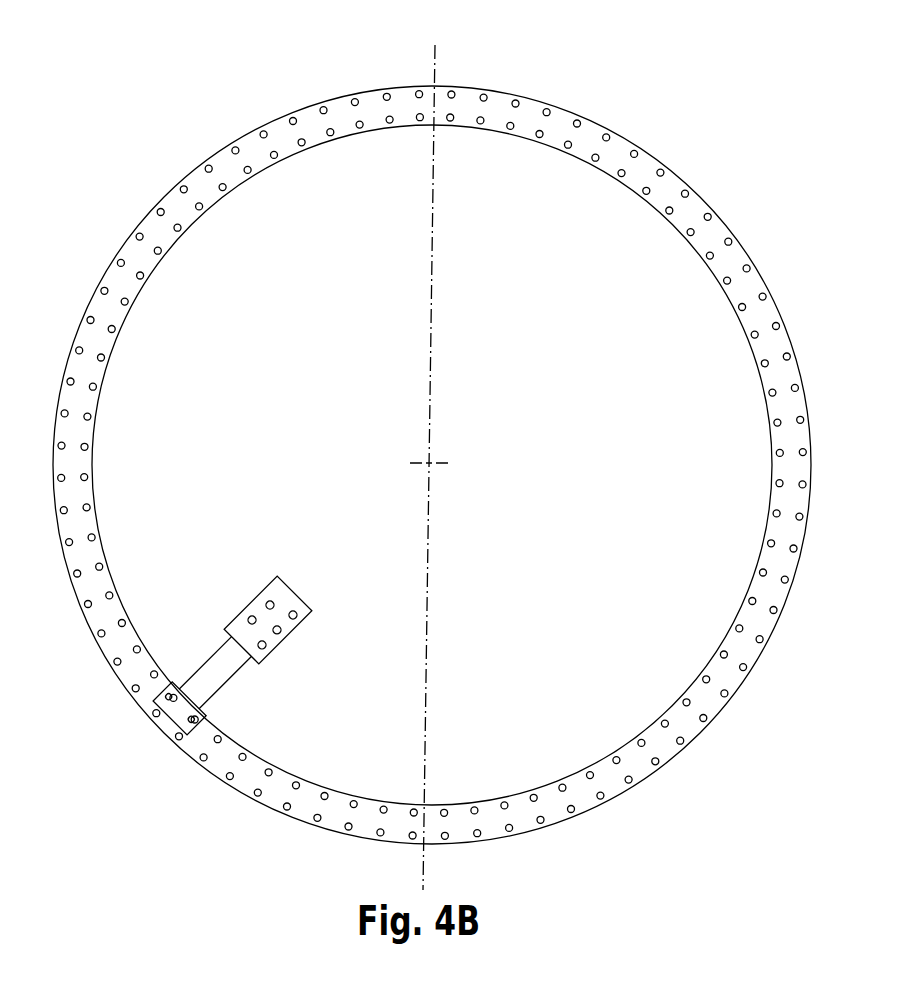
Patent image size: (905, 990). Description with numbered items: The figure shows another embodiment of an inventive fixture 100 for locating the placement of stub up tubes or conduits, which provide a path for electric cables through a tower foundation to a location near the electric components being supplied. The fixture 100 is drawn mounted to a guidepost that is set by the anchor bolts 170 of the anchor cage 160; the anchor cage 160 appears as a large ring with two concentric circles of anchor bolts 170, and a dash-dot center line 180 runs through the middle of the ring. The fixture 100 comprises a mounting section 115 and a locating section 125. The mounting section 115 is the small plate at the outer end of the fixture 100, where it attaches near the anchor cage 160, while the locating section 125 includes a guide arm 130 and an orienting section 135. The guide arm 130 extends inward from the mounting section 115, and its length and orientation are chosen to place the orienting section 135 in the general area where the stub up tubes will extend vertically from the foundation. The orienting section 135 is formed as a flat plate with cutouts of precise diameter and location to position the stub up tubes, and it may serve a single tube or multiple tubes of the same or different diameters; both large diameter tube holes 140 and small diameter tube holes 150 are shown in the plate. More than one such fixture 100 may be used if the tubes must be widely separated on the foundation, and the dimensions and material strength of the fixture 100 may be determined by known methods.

The fixture 100 is at (208, 461).
The mounting section 115 is at (178, 682).
The locating section 125 is at (206, 610).
The guide arm 130 is at (218, 694).
The orienting section 135 is at (330, 587).
The large diameter tube holes 140 is at (266, 603).
The small diameter tube holes 150 is at (295, 620).
The anchor cage 160 is at (727, 225).
The anchor bolts 170 is at (104, 288).
The axis of rotation 180 is at (438, 50).